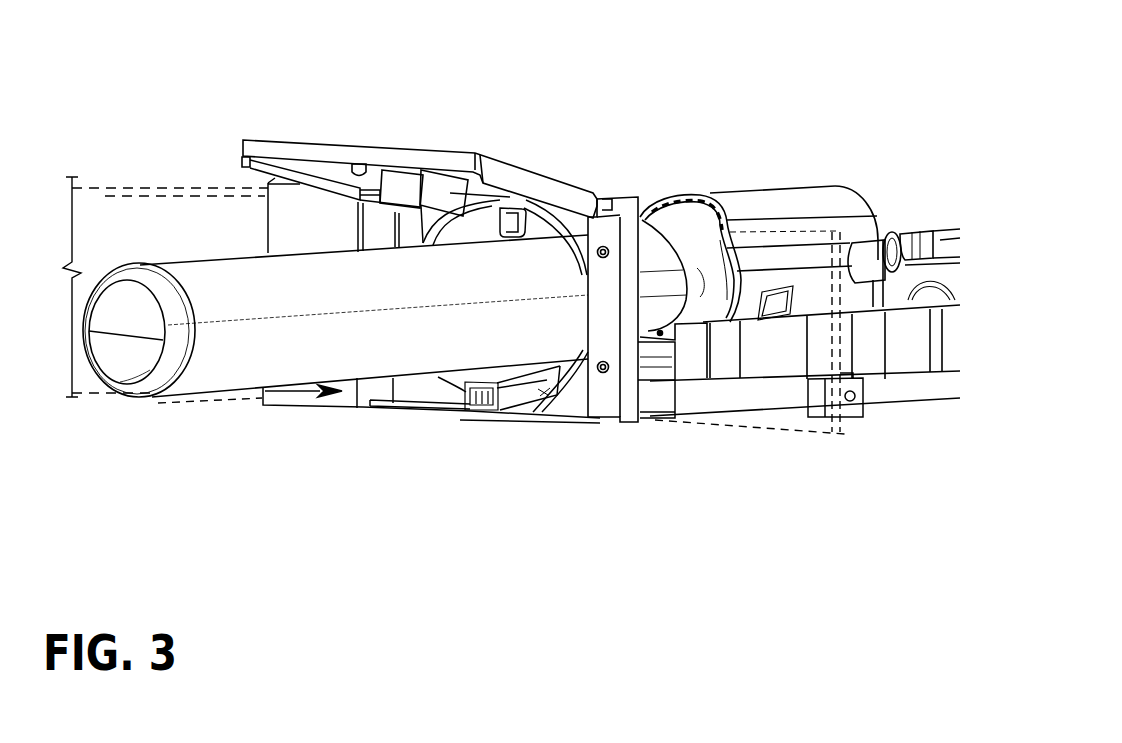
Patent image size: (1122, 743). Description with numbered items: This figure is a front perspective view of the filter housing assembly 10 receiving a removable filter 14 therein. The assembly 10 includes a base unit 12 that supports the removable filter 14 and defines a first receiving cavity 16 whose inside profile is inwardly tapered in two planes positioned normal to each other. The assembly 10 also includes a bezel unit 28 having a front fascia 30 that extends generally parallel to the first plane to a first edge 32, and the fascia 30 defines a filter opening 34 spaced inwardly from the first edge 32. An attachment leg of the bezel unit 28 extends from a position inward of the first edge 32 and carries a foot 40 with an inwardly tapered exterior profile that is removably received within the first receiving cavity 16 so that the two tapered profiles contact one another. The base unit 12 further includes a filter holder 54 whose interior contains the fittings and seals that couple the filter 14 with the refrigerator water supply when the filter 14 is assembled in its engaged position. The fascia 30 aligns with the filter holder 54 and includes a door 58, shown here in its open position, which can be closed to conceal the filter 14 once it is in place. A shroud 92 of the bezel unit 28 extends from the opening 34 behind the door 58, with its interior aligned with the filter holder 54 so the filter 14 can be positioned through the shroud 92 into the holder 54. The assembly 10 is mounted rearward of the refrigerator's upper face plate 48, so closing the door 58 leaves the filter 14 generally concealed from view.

The filter housing assembly 10 is at (542, 115).
The base unit 12 is at (880, 388).
The removable filter 14 is at (233, 363).
The first receiving cavity 16 is at (675, 352).
The bezel unit 28 is at (607, 187).
The front fascia 30 is at (293, 232).
The first edge 32 is at (634, 400).
The filter opening 34 is at (544, 392).
The foot 40 is at (653, 362).
The upper face plate 48 is at (155, 217).
The filter holder 54 is at (787, 198).
The door 58 is at (432, 160).
The shroud 92 is at (653, 252).